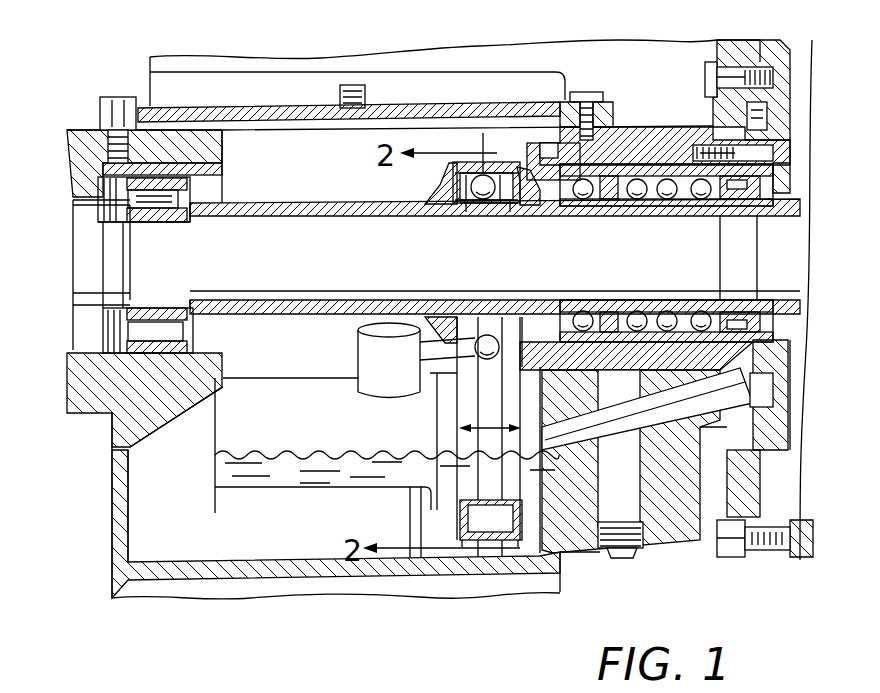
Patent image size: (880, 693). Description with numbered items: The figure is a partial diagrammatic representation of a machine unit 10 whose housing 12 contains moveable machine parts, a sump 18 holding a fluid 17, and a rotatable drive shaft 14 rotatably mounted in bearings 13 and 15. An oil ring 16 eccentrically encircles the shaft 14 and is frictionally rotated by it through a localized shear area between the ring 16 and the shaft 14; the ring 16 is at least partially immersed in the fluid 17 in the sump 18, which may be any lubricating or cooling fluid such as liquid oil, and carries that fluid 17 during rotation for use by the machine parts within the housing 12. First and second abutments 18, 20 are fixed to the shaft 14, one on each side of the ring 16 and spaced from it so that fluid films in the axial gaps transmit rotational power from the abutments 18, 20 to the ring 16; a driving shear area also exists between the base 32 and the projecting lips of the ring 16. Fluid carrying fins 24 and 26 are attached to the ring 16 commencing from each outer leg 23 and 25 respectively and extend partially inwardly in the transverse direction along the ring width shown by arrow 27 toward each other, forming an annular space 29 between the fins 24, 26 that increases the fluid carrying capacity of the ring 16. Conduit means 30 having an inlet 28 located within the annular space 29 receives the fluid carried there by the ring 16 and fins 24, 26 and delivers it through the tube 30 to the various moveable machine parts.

The machine unit 10 is at (418, 14).
The housing 12 is at (441, 102).
The bearing 13 is at (162, 205).
The rotatable drive shaft 14 is at (313, 300).
The bearing 15 is at (657, 207).
The oil ring 16 is at (467, 432).
The fluid 17 is at (270, 452).
The sump 18 is at (438, 194).
The second abutment 20 is at (357, 84).
The outer leg 23 is at (470, 168).
The fluid carrying fin 24 is at (455, 206).
The outer leg 25 is at (512, 172).
The fluid carrying fin 26 is at (510, 206).
The arrow 27 is at (487, 427).
The inlet 28 is at (488, 206).
The annular space 29 is at (485, 386).
The conduit means 30 is at (497, 317).
The base 32 is at (470, 206).